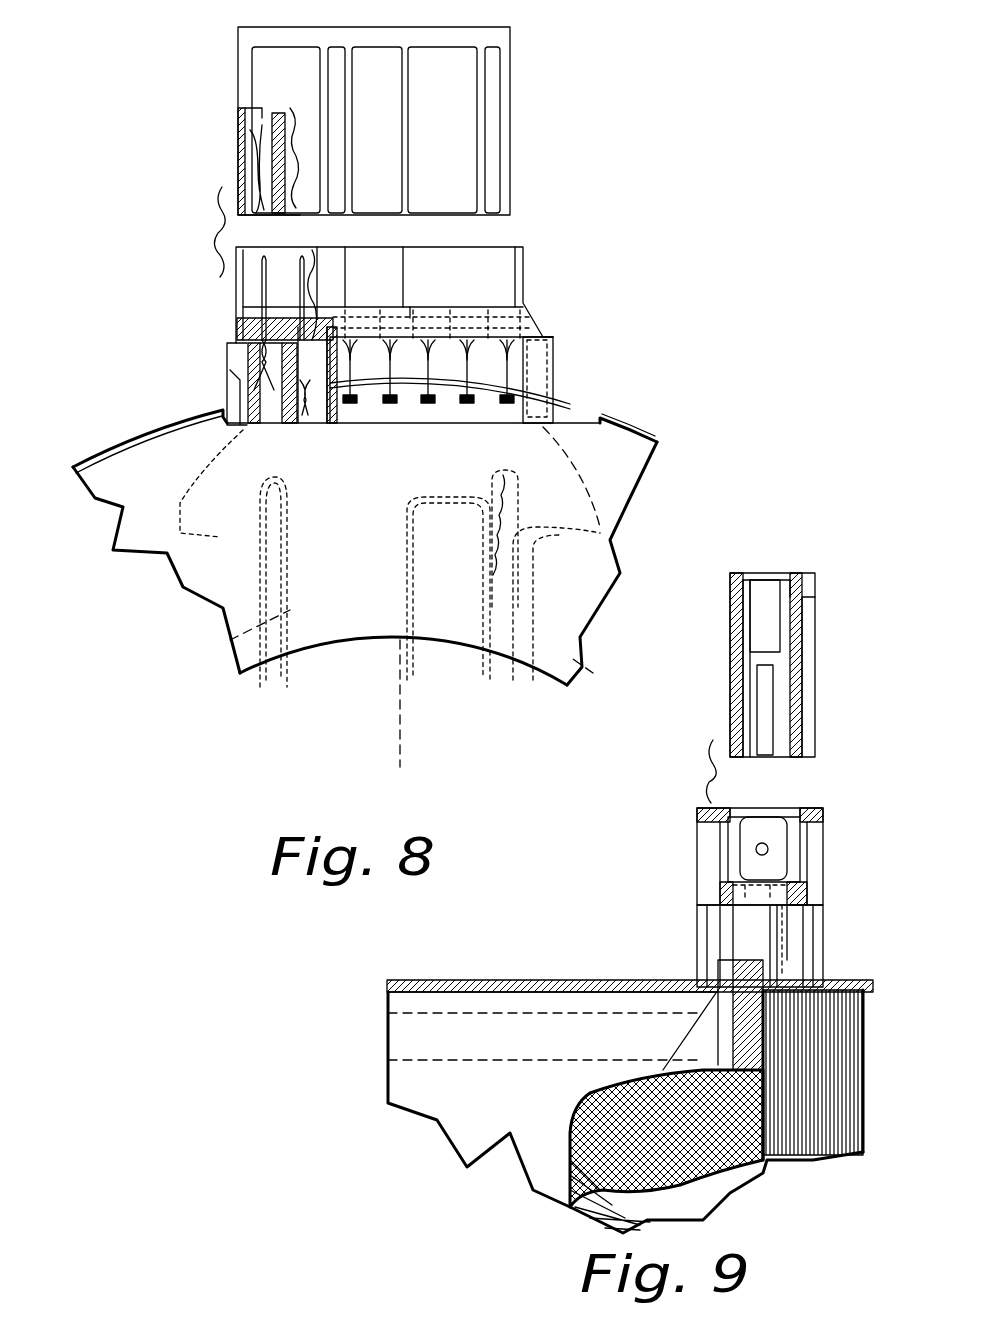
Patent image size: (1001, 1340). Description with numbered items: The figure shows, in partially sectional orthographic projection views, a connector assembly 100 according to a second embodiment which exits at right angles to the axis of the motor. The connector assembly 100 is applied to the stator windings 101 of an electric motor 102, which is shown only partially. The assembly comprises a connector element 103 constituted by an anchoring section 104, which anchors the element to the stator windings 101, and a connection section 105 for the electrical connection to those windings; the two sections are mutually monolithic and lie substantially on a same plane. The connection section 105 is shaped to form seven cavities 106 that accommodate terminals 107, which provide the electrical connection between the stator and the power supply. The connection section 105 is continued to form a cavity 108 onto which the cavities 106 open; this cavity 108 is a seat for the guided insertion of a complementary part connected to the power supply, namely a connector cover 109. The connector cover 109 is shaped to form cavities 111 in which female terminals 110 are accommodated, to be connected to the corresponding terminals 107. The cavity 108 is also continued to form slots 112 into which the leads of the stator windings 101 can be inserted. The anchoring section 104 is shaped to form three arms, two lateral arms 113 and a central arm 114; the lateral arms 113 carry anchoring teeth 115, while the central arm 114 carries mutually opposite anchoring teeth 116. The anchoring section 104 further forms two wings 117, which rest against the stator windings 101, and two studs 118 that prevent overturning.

In FIG. 8, the connector assembly 100 is at (548, 302).
In FIG. 9, the stator windings 101 is at (590, 1137).
In FIG. 8, the electric motor 102 is at (657, 480).
In FIG. 9, the electric motor 102 is at (470, 1103).
In FIG. 8, the connector element 103 is at (557, 355).
In FIG. 8, the anchoring section 104 is at (330, 660).
In FIG. 9, the anchoring section 104 is at (727, 1020).
In FIG. 8, the connection section 105 is at (537, 277).
In FIG. 9, the connection section 105 is at (827, 913).
In FIG. 8, the cavities 106 is at (237, 387).
In FIG. 8, the terminals 107 is at (297, 337).
In FIG. 9, the terminals 107 is at (773, 862).
In FIG. 8, the cavity 108 is at (463, 253).
In FIG. 9, the cavity 108 is at (733, 855).
In FIG. 8, the connector cover 109 is at (468, 112).
In FIG. 9, the connector cover 109 is at (808, 655).
In FIG. 8, the female terminals 110 is at (243, 145).
In FIG. 8, the cavities 111 is at (290, 110).
In FIG. 8, the slots 112 is at (465, 375).
In FIG. 8, the lateral arms 113 is at (230, 640).
In FIG. 8, the central arm 114 is at (433, 660).
In FIG. 8, the anchoring teeth 115 is at (270, 683).
In FIG. 8, the anchoring teeth 116 is at (383, 680).
In FIG. 8, the wings 117 is at (553, 462).
In FIG. 8, the studs 118 is at (620, 610).